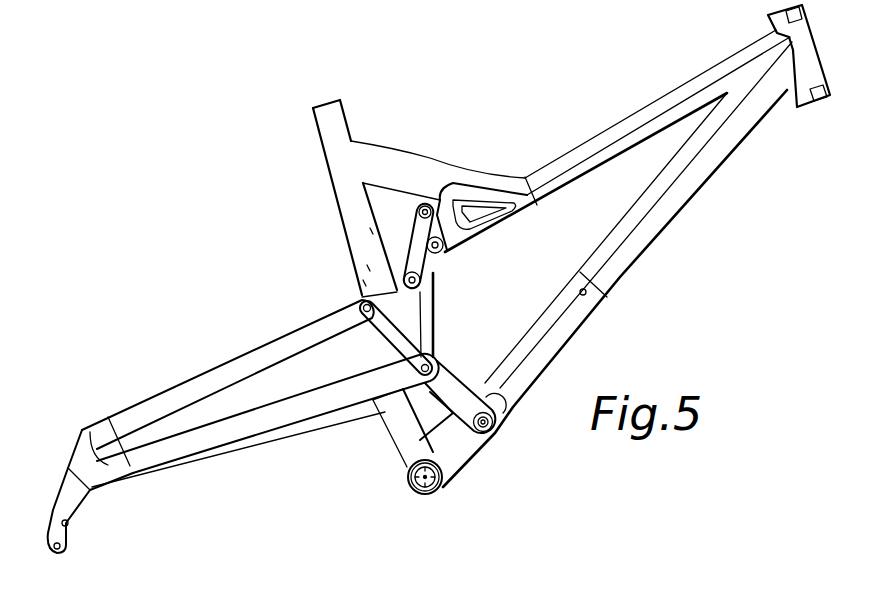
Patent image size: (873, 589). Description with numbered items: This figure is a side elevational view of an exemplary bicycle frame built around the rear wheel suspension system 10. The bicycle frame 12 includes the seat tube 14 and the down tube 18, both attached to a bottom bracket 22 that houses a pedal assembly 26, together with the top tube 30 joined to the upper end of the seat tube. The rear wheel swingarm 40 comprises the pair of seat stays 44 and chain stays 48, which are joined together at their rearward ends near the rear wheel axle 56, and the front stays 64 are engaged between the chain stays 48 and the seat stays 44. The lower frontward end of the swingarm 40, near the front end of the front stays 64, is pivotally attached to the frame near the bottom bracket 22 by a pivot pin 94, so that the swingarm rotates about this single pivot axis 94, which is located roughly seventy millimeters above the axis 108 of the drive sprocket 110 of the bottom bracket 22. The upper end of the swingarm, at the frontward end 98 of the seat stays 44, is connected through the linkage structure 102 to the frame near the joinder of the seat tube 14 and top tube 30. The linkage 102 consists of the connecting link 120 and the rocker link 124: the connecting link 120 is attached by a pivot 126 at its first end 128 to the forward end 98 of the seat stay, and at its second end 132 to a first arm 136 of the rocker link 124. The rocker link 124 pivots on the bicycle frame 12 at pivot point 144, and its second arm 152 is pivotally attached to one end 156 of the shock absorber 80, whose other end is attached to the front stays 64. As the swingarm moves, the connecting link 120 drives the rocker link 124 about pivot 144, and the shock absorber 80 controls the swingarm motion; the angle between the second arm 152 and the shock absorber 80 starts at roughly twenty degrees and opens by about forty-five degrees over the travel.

The rear wheel suspension system 10 is at (85, 373).
The bicycle frame 12 is at (545, 112).
The seat tube 14 is at (343, 177).
The down tube 18 is at (643, 243).
The bottom bracket 22 is at (443, 487).
The pedal assembly 26 is at (407, 480).
The top tube 30 is at (640, 115).
The rear wheel swingarm 40 is at (203, 347).
The seat stays 44 is at (163, 397).
The chain stays 48 is at (277, 417).
The rear wheel axle 56 is at (72, 525).
The front stays 64 is at (500, 404).
The shock absorber 80 is at (428, 322).
The pivot pin 94 is at (497, 433).
The frontward end of seat stays 98 is at (327, 317).
The linkage structure 102 is at (253, 255).
The drive sprocket axis 108 is at (425, 490).
The drive sprocket 110 is at (417, 493).
The connecting link 120 is at (367, 267).
The rocker link 124 is at (437, 282).
The pivot 126 is at (355, 338).
The first end of connecting link 128 is at (363, 282).
The second end of connecting link 132 is at (370, 230).
The first arm of rocker link 136 is at (437, 268).
The pivot point 144 is at (447, 248).
The second arm of rocker link 152 is at (445, 173).
The end of shock absorber 156 is at (410, 200).